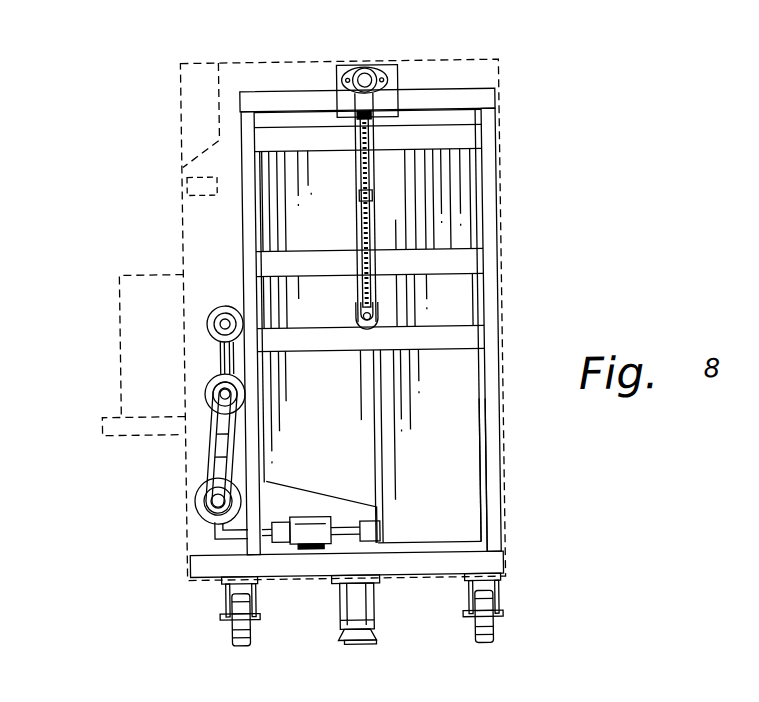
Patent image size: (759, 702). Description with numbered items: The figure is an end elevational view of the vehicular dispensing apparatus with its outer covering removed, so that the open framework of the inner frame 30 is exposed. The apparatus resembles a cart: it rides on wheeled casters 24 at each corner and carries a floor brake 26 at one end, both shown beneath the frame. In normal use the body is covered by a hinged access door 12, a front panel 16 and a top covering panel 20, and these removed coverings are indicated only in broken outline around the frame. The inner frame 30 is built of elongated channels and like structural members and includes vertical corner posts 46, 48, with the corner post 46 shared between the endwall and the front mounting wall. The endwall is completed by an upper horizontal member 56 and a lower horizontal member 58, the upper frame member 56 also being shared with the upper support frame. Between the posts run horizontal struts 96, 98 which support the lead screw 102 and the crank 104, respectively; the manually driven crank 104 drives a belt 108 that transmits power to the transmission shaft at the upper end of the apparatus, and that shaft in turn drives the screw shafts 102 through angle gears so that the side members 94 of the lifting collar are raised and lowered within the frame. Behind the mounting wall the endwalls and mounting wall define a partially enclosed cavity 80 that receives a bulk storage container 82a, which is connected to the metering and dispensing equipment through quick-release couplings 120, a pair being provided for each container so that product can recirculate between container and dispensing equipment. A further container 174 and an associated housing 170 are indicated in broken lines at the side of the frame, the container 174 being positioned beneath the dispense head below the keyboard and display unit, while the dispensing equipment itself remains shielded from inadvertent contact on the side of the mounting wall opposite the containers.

The hinged access door 12 is at (186, 520).
The front panel 16 is at (186, 214).
The top covering panel 20 is at (456, 56).
The wheeled casters 24 is at (236, 636).
The floor brake 26 is at (380, 620).
The inner frame 30 is at (508, 94).
The vertical corner post 46 is at (243, 221).
The vertical corner post 48 is at (490, 205).
The upper horizontal member 56 is at (280, 90).
The lower horizontal member 58 is at (489, 570).
The partially enclosed cavity 80 is at (465, 551).
The bulk storage container 82a is at (468, 449).
The side member 94 is at (488, 130).
The horizontal strut 96 is at (302, 260).
The horizontal strut 98 is at (335, 348).
The lead screw 102 is at (374, 166).
The crank 104 is at (357, 320).
The belt 108 is at (360, 143).
The quick-release couplings 120 is at (312, 516).
The lower housing 170 is at (160, 440).
The container 174 is at (150, 232).